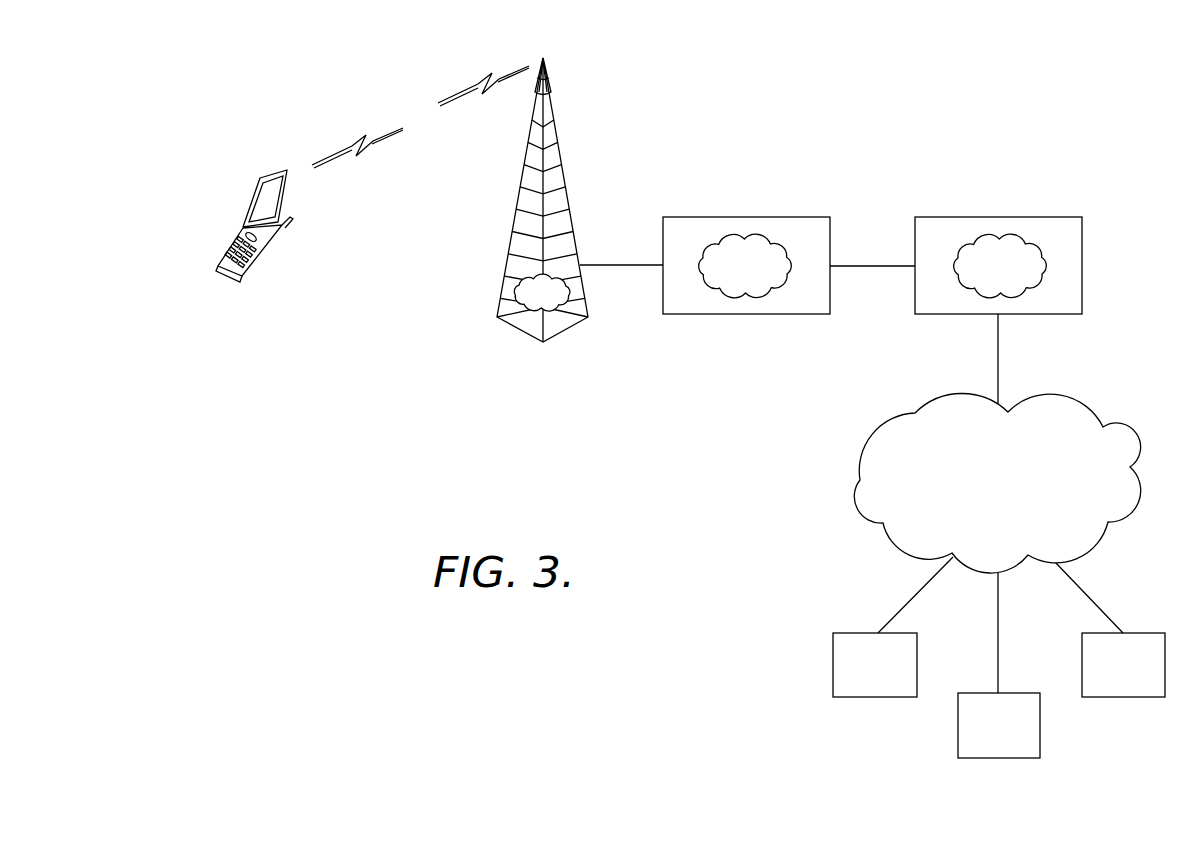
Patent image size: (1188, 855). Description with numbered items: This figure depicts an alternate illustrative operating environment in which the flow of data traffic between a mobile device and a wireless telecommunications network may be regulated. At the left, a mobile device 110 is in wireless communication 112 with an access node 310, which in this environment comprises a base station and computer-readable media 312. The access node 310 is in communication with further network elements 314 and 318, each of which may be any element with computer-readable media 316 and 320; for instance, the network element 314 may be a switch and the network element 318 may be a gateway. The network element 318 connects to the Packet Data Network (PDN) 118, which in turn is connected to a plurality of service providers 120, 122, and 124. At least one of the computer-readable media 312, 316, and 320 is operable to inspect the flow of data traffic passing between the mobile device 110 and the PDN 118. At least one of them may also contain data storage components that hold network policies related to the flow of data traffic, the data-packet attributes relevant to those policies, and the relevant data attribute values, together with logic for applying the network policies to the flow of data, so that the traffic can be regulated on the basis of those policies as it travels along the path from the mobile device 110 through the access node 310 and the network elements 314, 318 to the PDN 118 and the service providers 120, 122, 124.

The mobile device 110 is at (265, 256).
The communication 112 is at (307, 147).
The access node 310 is at (563, 133).
The computer-readable media 312 is at (557, 308).
The network element 314 is at (797, 315).
The computer-readable media 316 is at (753, 240).
The network element 318 is at (1063, 315).
The computer-readable media 320 is at (1005, 240).
The Packet Data Network (PDN) 118 is at (934, 399).
The service provider 120 is at (877, 697).
The service provider 122 is at (1002, 758).
The service provider 124 is at (1127, 697).